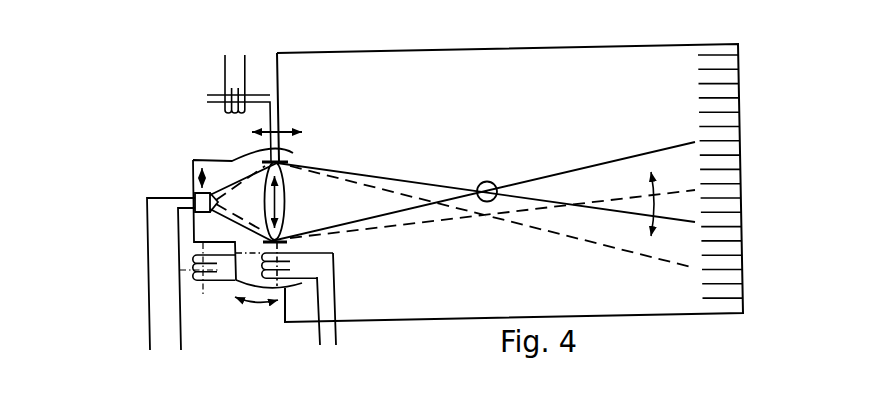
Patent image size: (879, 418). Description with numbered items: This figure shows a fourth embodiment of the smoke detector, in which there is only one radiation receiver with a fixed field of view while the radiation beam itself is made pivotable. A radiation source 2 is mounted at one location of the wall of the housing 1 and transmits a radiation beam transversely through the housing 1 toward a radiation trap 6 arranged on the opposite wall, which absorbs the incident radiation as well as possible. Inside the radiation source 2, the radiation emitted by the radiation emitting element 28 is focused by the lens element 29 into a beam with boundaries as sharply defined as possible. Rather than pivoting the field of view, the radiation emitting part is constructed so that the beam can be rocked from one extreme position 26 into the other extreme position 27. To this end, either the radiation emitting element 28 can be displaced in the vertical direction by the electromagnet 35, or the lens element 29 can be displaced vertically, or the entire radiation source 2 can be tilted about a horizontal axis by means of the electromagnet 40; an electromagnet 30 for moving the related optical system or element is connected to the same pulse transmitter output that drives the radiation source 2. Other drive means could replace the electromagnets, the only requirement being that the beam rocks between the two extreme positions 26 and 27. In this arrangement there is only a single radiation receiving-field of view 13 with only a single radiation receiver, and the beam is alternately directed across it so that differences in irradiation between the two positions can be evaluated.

The housing 1 is at (510, 162).
The radiation source 2 is at (215, 160).
The radiation trap 6 is at (713, 115).
The radiation receiving-field of view 13 is at (485, 181).
The extreme position of the radiation beam 26 is at (403, 187).
The extreme position of the radiation beam 27 is at (417, 218).
The radiation emitting element 28 is at (195, 193).
The lens element 29 is at (285, 193).
The electromagnet 30 is at (293, 262).
The electromagnet 35 is at (180, 270).
The electromagnet 40 is at (220, 90).